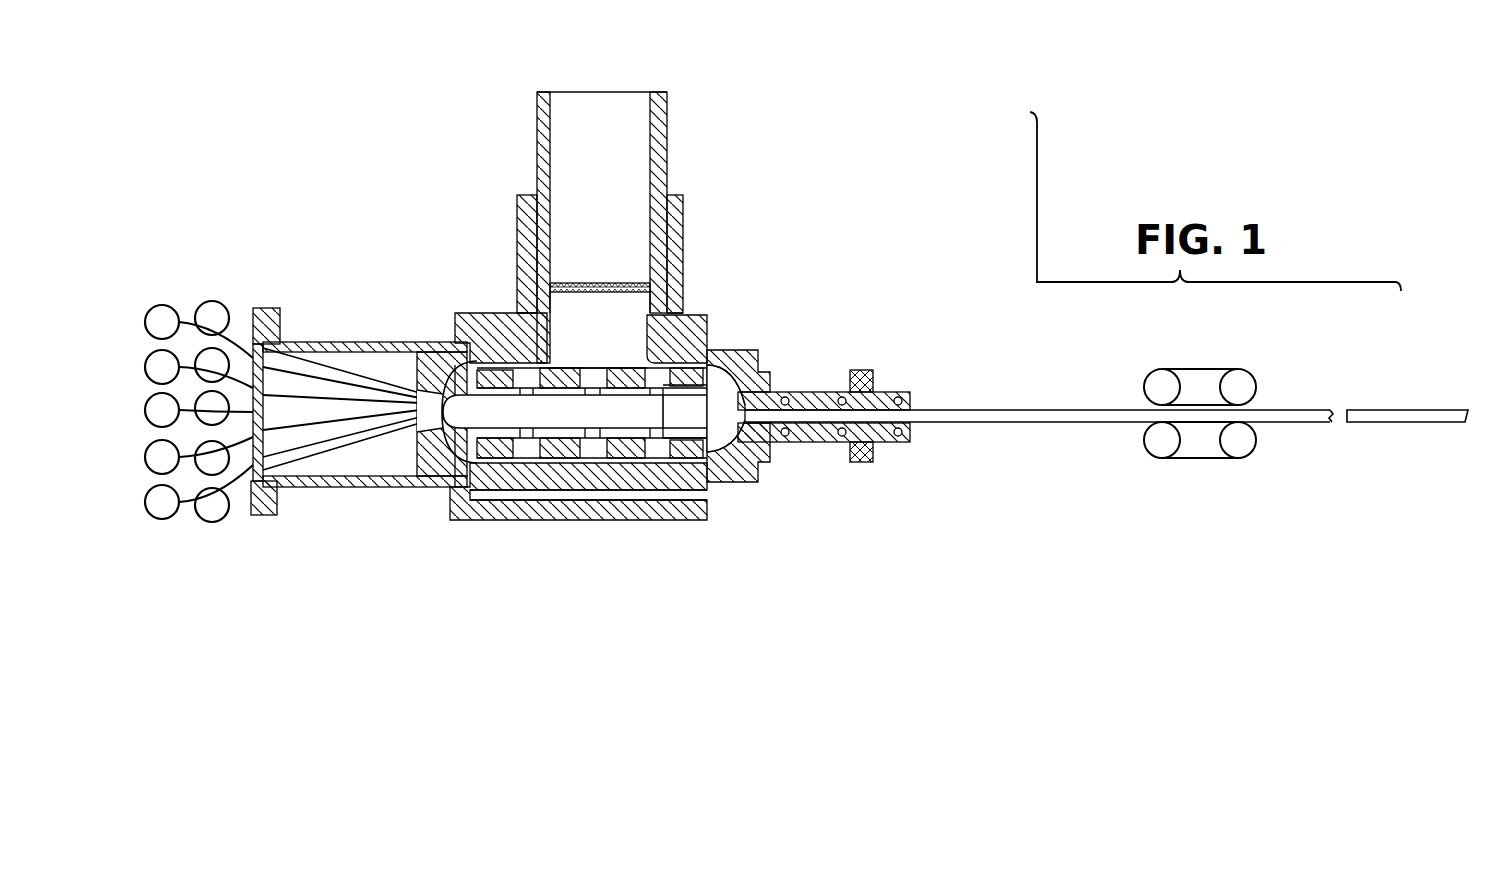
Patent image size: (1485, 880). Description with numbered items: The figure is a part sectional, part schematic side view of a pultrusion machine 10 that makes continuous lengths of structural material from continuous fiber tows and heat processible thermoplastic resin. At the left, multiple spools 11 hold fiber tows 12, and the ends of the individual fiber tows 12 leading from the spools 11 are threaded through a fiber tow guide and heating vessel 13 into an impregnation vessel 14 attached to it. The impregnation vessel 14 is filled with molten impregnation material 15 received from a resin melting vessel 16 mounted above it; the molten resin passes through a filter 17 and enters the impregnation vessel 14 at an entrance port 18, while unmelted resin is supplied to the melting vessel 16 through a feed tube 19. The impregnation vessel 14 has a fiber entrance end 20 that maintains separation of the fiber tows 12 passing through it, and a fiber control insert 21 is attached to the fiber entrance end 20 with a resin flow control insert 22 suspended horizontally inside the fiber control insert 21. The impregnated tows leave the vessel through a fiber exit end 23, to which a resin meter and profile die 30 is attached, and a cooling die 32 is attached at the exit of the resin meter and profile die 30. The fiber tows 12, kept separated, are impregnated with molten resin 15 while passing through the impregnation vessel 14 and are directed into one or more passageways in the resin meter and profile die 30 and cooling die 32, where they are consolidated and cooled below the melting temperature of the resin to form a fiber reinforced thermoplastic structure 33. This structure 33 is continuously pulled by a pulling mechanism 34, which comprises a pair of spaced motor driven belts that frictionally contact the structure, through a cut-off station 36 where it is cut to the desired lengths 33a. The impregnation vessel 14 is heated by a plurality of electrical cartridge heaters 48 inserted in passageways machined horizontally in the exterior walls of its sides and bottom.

The pultrusion machine 10 is at (470, 118).
The spools 11 is at (164, 305).
The fiber tows 12 is at (245, 307).
The fiber tow guide and heating vessel 13 is at (372, 342).
The impregnation vessel 14 is at (497, 312).
The molten impregnation material 15 is at (605, 192).
The resin melting vessel 16 is at (682, 250).
The filter 17 is at (597, 283).
The entrance port 18 is at (640, 314).
The feed tube 19 is at (670, 133).
The fiber entrance end 20 is at (425, 367).
The fiber control insert 21 is at (562, 470).
The resin flow control insert 22 is at (540, 418).
The fiber exit end 23 is at (762, 472).
The resin meter and profile die 30 is at (815, 392).
The cooling die 32 is at (905, 392).
The fiber reinforced thermoplastic structure 33 is at (1047, 408).
The desired lengths 33a is at (1423, 408).
The pulling mechanism 34 is at (1207, 369).
The cut-off station 36 is at (1338, 410).
The electrical cartridge heaters 48 is at (703, 494).